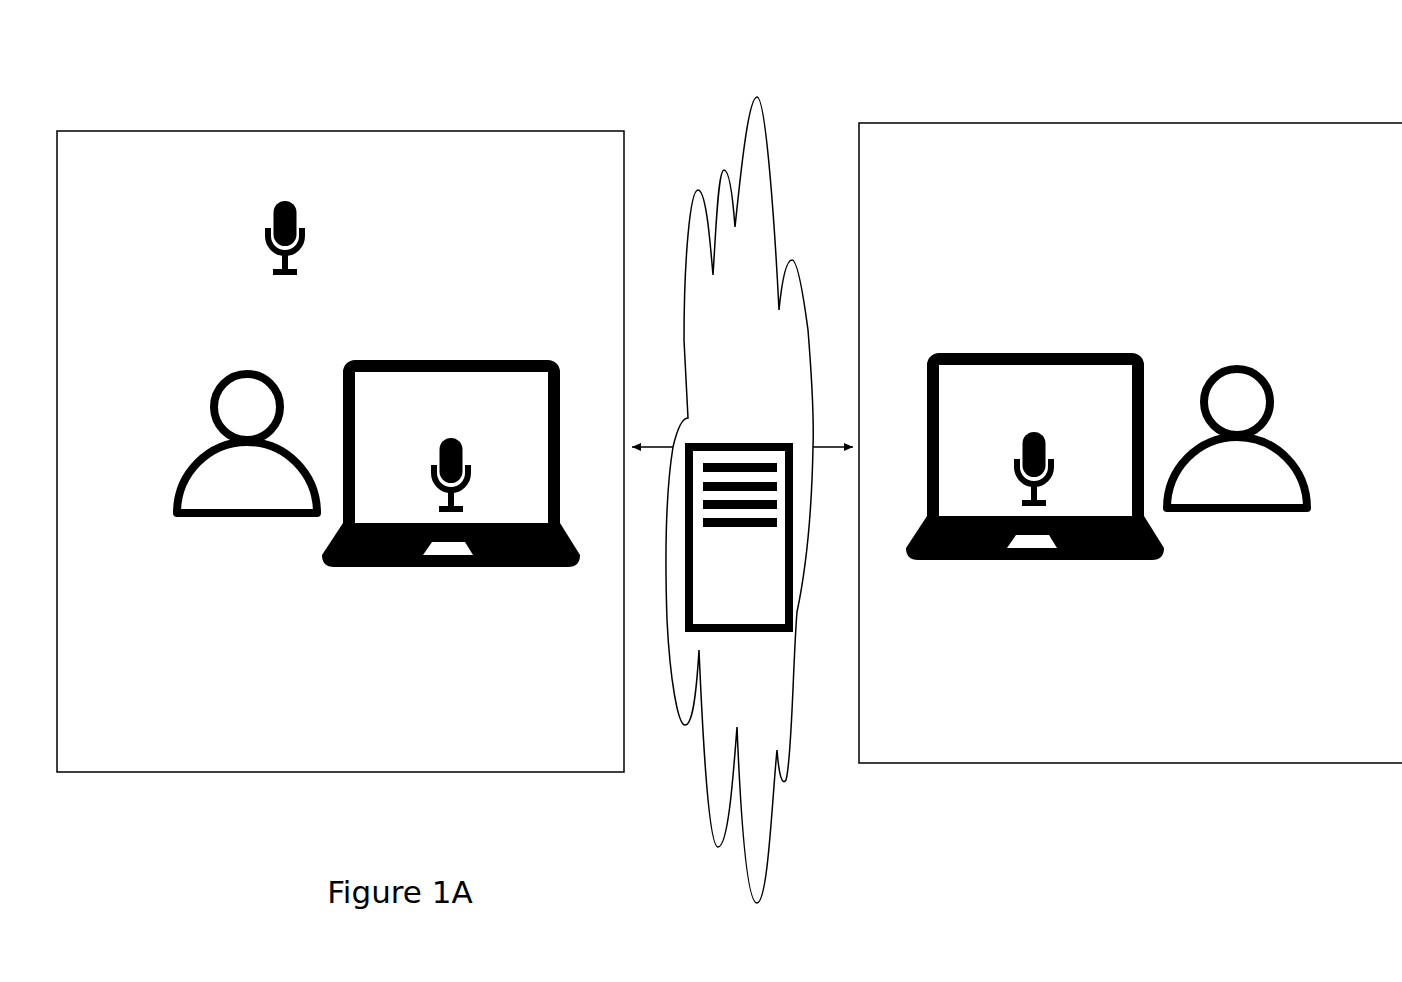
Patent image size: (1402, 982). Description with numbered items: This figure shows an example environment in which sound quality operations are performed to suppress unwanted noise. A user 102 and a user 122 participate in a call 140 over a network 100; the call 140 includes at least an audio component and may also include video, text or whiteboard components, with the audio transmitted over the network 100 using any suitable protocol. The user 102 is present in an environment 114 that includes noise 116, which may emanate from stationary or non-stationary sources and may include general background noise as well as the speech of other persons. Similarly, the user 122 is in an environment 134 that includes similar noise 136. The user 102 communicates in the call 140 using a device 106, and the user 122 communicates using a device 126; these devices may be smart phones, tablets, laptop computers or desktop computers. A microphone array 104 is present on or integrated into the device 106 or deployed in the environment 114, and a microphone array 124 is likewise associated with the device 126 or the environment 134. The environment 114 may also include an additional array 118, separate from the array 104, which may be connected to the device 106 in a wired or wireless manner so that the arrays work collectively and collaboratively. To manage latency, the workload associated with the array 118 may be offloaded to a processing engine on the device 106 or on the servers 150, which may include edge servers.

The network 100 is at (709, 115).
The user 102 is at (247, 443).
The microphone array 104 is at (432, 467).
The device 106 is at (437, 360).
The environment 114 is at (340, 451).
The noise 116 is at (237, 476).
The array 118 is at (270, 227).
The user 122 is at (1237, 438).
The microphone array 124 is at (1048, 462).
The device 126 is at (1048, 352).
The environment 134 is at (1130, 443).
The noise 136 is at (1253, 477).
The call 140 is at (820, 449).
The servers 150 is at (739, 537).